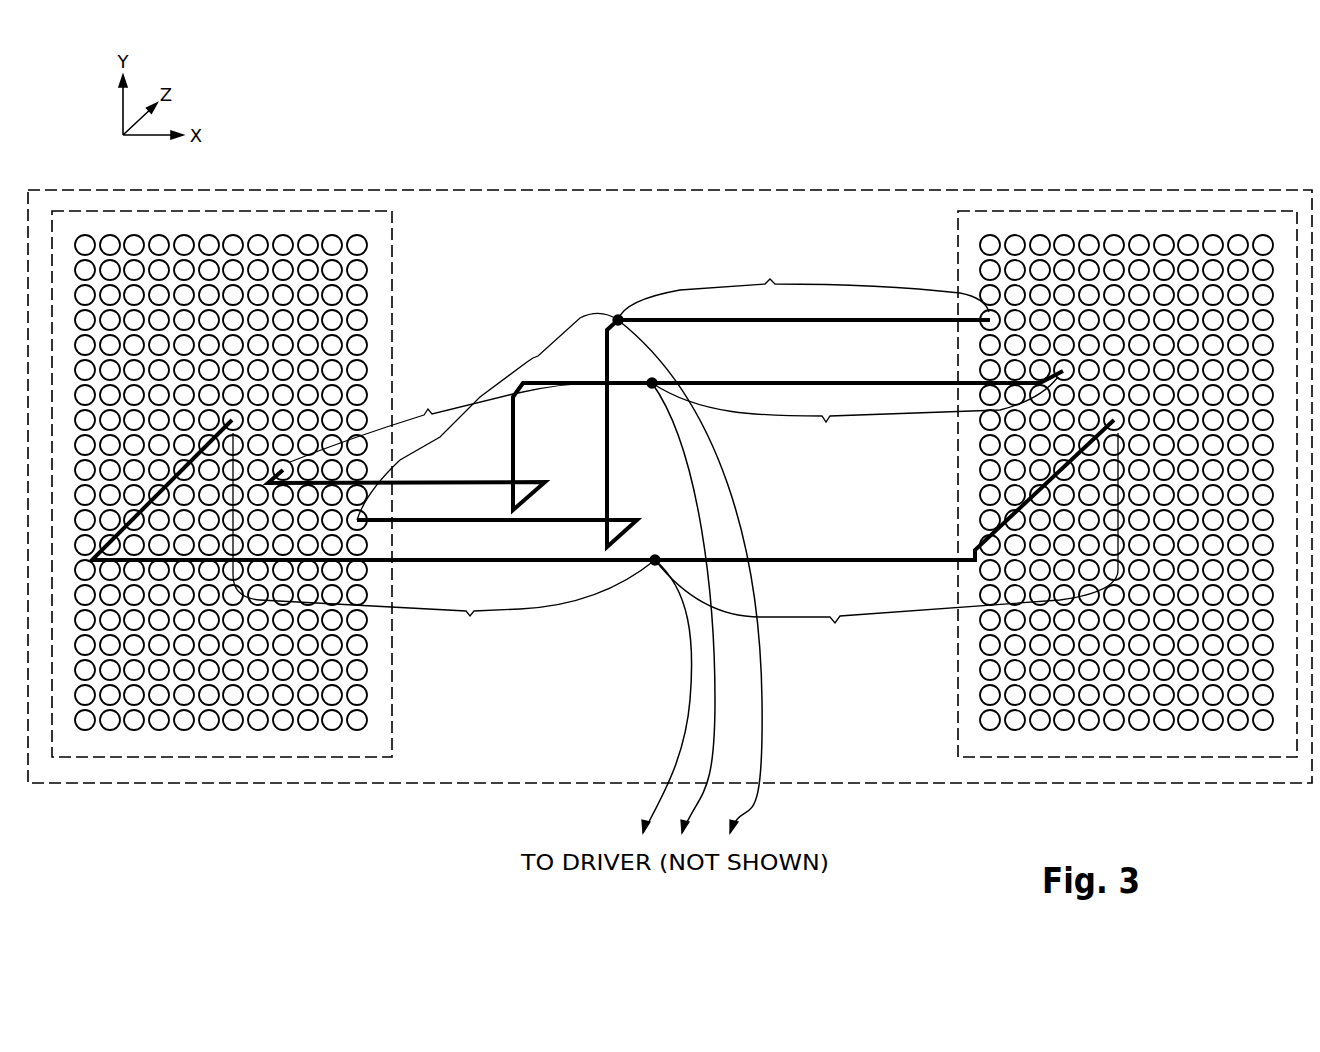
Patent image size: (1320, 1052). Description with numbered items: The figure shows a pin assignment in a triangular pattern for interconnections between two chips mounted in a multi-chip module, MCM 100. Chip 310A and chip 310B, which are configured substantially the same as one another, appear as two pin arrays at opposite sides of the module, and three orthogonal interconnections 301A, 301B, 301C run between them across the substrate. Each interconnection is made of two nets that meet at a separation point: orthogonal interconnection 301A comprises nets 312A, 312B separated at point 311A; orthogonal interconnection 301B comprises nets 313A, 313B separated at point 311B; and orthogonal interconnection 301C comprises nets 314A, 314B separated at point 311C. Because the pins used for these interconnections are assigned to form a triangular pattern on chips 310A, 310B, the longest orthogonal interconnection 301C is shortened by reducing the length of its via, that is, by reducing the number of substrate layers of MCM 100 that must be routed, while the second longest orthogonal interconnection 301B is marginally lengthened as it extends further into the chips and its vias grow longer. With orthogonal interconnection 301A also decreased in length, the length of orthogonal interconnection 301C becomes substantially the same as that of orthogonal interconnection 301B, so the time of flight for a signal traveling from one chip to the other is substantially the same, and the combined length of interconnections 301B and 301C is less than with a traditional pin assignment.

The MCM 100 is at (1070, 190).
The chip 310A is at (960, 248).
The chip 310B is at (388, 262).
The orthogonal interconnection 301A is at (788, 381).
The orthogonal interconnection 301B is at (853, 558).
The orthogonal interconnection 301C is at (878, 323).
The point 311A is at (653, 379).
The point 311B is at (655, 557).
The point 311C is at (614, 316).
The net 312A is at (855, 415).
The net 312B is at (471, 421).
The net 313A is at (886, 545).
The net 313B is at (444, 546).
The net 314A is at (803, 286).
The net 314B is at (487, 416).